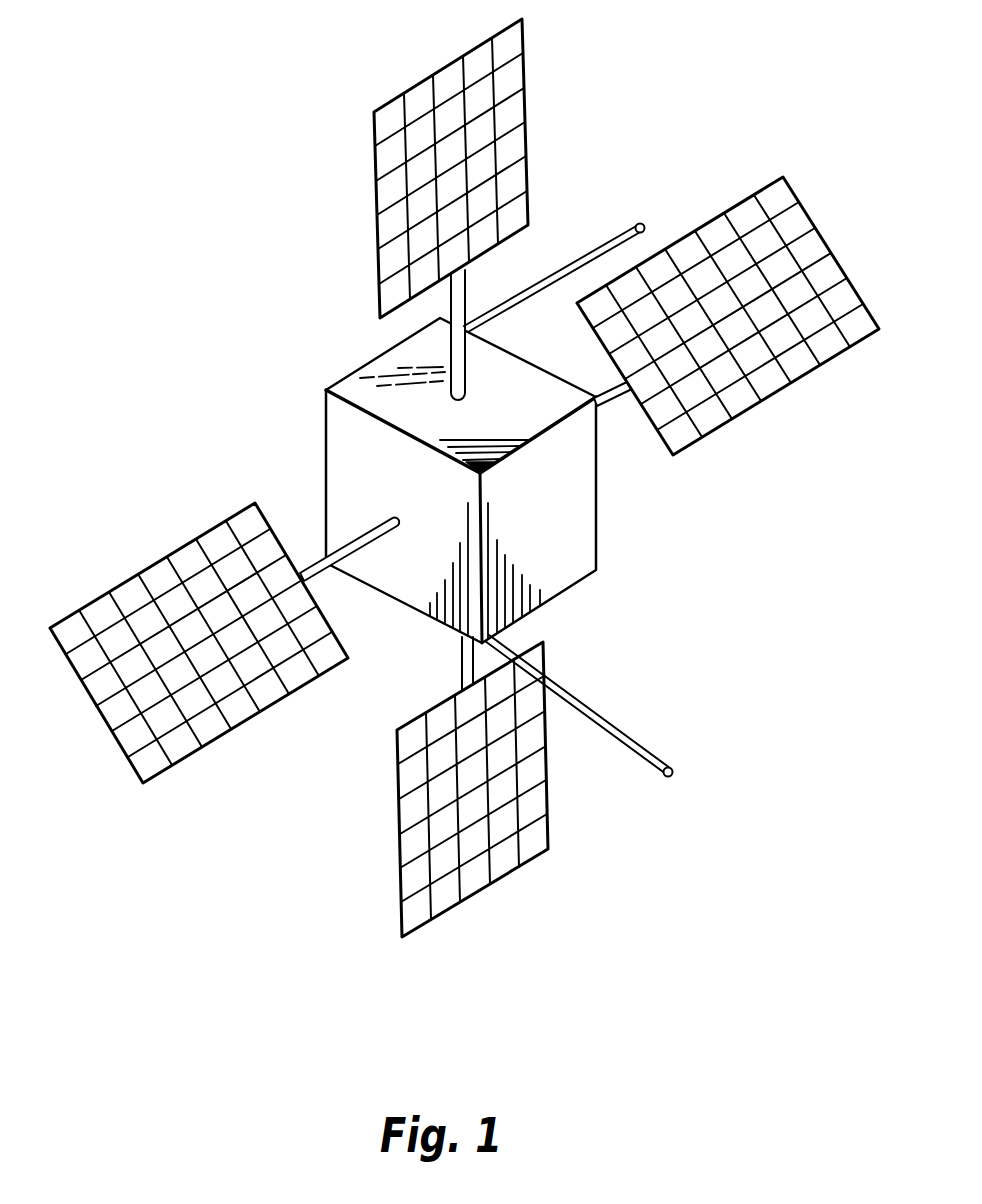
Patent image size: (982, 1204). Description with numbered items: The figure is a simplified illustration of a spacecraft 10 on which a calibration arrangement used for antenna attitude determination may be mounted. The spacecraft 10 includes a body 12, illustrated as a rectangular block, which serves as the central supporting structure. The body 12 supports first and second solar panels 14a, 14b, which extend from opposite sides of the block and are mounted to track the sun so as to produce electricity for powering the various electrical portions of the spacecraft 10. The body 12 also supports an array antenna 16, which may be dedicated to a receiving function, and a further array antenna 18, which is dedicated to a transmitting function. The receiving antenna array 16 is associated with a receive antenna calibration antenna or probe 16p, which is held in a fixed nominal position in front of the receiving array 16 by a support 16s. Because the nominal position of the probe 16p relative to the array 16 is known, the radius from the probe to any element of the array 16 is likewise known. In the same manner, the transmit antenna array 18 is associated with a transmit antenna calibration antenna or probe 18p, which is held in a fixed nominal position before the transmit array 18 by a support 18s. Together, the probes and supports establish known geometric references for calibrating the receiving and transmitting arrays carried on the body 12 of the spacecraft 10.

The spacecraft 10 is at (623, 886).
The body 12 is at (345, 378).
The first solar panel 14a is at (107, 590).
The second solar panel 14b is at (850, 279).
The array antenna 16 is at (376, 205).
The support 16s is at (600, 247).
The receive antenna calibration probe 16p is at (644, 222).
The array antenna 18 is at (395, 812).
The support 18s is at (585, 706).
The transmit antenna calibration probe 18p is at (674, 772).